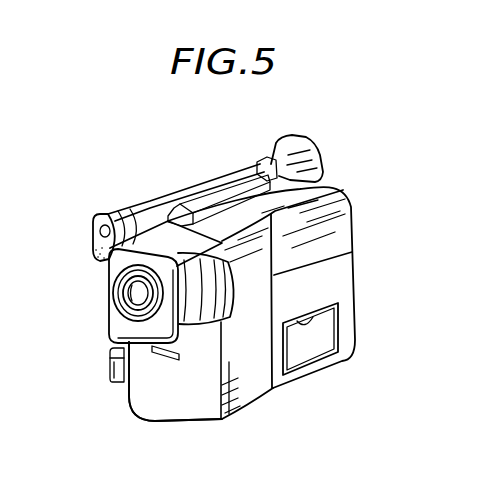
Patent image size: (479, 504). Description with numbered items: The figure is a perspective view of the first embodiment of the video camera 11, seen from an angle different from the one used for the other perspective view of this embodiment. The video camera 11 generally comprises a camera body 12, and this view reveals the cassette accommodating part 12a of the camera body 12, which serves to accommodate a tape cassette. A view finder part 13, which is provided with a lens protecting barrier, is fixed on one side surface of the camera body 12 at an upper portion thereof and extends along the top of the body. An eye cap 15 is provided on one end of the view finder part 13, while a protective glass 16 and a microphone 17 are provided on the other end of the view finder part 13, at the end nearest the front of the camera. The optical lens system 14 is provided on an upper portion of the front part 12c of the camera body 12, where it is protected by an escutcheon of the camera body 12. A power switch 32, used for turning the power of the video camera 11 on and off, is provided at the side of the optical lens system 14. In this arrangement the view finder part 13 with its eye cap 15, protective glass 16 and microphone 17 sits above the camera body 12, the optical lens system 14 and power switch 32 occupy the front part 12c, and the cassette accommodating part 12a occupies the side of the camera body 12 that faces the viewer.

The video camera 11 is at (154, 136).
The camera body 12 is at (293, 192).
The cassette accommodating part 12a is at (305, 346).
The front part 12c is at (150, 402).
The view finder part 13 is at (153, 205).
The optical lens system 14 is at (133, 289).
The eye cap 15 is at (271, 148).
The protective glass 16 is at (97, 231).
The microphone 17 is at (100, 254).
The power switch 32 is at (222, 312).